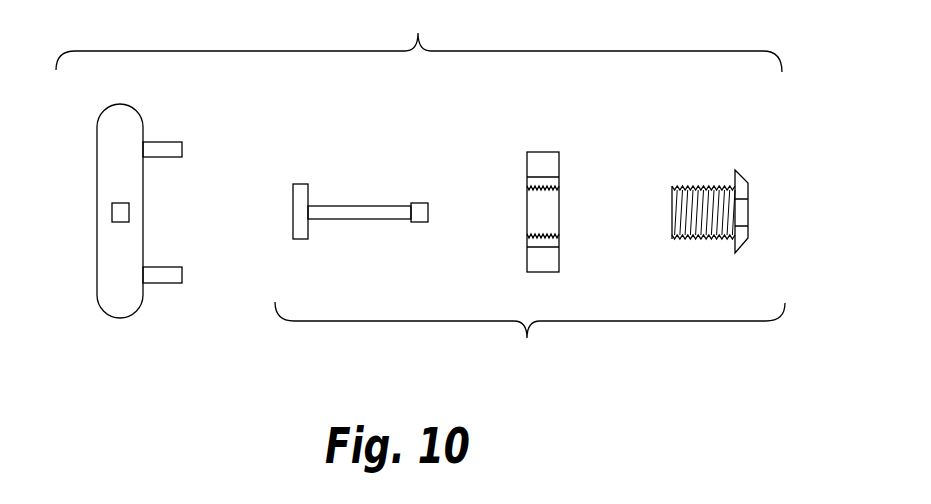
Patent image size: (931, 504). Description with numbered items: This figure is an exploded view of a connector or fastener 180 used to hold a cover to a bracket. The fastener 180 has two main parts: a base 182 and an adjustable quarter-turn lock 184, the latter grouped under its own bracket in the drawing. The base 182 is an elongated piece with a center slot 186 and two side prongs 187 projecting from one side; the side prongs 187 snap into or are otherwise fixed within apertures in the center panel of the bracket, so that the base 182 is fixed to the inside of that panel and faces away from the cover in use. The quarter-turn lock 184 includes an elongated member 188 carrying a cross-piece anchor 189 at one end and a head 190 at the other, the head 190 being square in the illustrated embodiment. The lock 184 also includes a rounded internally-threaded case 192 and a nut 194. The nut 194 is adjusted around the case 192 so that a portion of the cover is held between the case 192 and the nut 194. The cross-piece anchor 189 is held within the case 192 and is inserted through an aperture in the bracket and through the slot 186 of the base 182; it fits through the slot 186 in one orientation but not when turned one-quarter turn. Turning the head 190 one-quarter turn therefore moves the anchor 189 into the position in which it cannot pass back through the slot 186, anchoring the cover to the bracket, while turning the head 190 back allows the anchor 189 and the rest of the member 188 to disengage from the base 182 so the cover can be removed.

The fastener 180 is at (419, 36).
The base 182 is at (108, 313).
The adjustable quarter-turn lock 184 is at (530, 338).
The center slot 186 is at (112, 214).
The side prongs 187 is at (162, 140).
The elongated member 188 is at (382, 213).
The cross-piece anchor 189 is at (301, 190).
The head 190 is at (420, 208).
The internally-threaded case 192 is at (740, 182).
The nut 194 is at (539, 161).